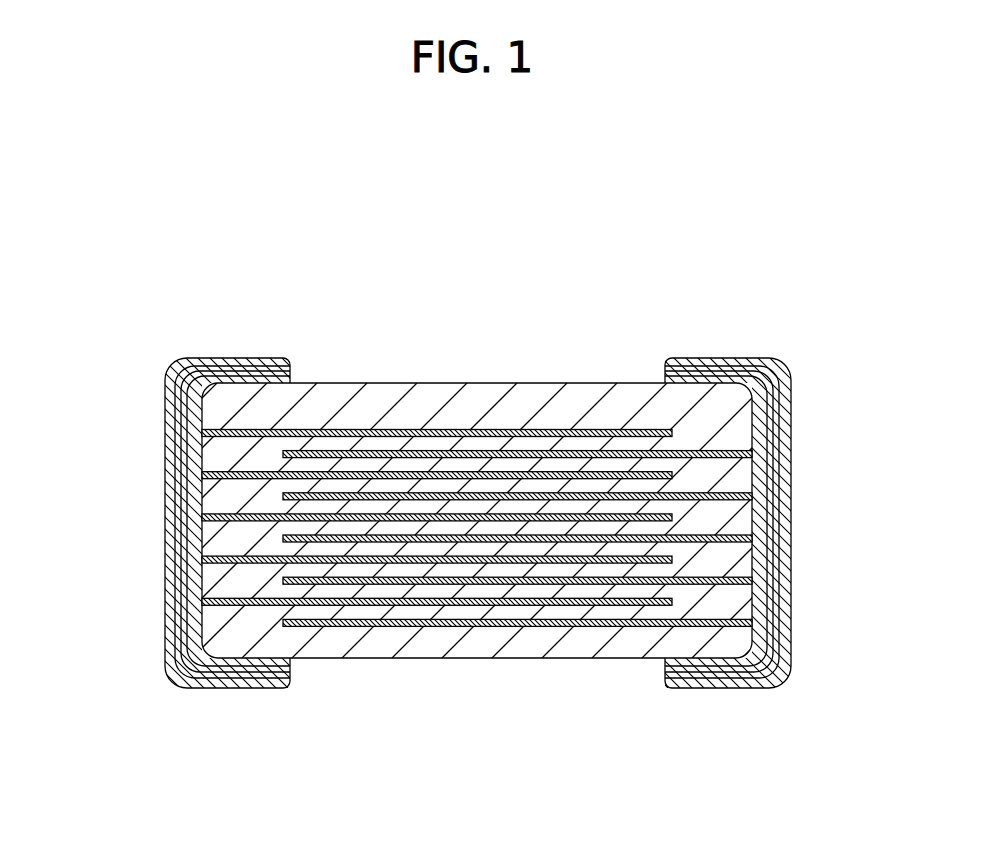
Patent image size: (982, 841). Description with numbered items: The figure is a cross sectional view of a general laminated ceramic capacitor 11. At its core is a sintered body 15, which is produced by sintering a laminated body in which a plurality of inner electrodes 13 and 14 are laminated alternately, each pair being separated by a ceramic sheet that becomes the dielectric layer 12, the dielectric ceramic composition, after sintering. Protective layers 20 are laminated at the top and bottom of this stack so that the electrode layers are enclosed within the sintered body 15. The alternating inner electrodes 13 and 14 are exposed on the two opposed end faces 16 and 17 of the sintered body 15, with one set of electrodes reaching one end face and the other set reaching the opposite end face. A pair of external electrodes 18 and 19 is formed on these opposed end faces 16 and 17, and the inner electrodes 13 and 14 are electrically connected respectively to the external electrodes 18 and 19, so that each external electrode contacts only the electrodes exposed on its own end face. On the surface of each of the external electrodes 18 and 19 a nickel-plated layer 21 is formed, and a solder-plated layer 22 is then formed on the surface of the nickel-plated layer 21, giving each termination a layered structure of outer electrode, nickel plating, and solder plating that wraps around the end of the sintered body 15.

The laminated ceramic capacitor 11 is at (290, 327).
The dielectric layer 12 is at (338, 507).
The inner electrode 13 is at (346, 497).
The inner electrode 14 is at (250, 521).
The sintered body 15 is at (597, 660).
The end face of sintered body 16 is at (762, 432).
The end face of sintered body 17 is at (200, 452).
The external electrode 18 is at (762, 478).
The external electrode 19 is at (190, 527).
The protective layer 20 is at (542, 647).
The nickel-plated layer 21 is at (180, 592).
The solder-plated layer 22 is at (172, 655).